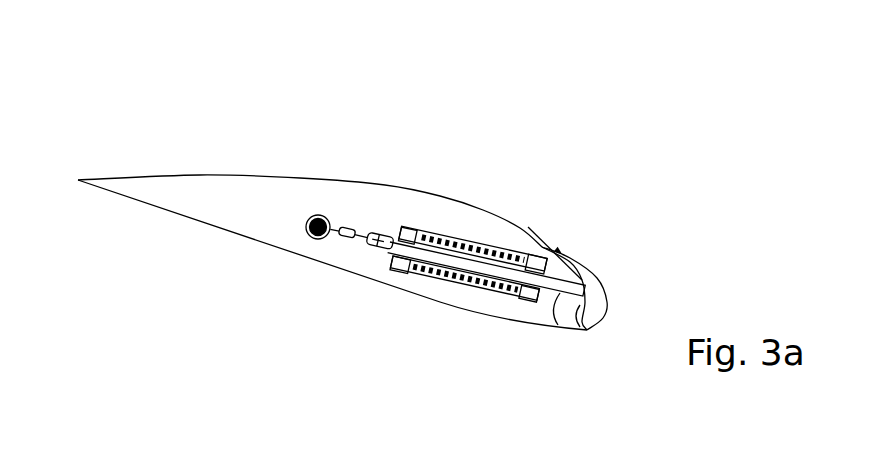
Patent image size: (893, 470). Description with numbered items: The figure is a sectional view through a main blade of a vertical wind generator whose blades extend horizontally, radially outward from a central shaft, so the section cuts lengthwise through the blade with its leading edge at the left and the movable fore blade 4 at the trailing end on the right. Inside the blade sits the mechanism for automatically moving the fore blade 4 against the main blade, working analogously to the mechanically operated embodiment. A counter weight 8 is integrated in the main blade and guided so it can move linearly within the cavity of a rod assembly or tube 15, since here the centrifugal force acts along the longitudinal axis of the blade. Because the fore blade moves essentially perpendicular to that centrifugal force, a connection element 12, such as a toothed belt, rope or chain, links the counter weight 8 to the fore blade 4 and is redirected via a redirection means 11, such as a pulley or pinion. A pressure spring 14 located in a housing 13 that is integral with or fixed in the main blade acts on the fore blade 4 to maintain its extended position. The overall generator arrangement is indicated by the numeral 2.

The wind turbine blade 2 is at (683, 119).
The fore blade 4 is at (598, 290).
The counter weight 8 is at (305, 141).
The redirection means 11 is at (331, 169).
The connection element 12 is at (376, 134).
The housing 13 is at (506, 340).
The pressure spring 14 is at (470, 198).
The rod assembly or tube 15 is at (275, 166).